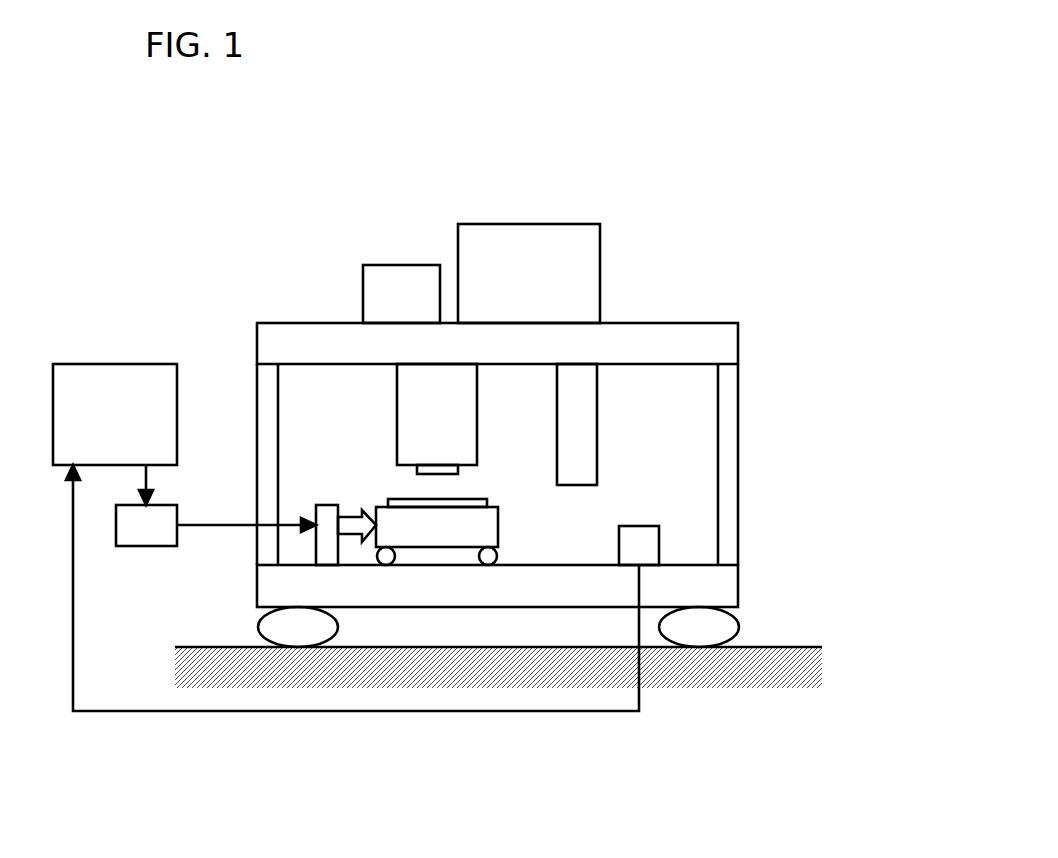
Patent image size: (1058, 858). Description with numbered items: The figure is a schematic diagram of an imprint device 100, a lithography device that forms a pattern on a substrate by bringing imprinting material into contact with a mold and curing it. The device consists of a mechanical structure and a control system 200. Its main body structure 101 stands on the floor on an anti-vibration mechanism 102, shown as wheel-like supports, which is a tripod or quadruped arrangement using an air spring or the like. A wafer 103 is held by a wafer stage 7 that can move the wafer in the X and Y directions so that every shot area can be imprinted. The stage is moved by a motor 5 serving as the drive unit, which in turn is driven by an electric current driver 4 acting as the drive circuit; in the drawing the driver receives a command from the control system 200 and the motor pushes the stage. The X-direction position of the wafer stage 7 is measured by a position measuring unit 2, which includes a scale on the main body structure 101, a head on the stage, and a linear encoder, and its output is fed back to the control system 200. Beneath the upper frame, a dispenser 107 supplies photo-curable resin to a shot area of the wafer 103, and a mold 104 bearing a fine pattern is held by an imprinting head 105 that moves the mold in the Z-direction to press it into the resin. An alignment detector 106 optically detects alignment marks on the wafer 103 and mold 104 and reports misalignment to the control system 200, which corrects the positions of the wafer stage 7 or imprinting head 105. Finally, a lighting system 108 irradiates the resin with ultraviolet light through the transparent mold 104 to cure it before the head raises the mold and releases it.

The imprint device 100 is at (482, 146).
The main body structure 101 is at (739, 585).
The anti-vibration mechanism 102 is at (257, 626).
The wafer 103 is at (388, 498).
The mold 104 is at (412, 497).
The imprinting head 105 is at (397, 410).
The alignment detector 106 is at (600, 262).
The dispenser 107 is at (585, 395).
The lighting system 108 is at (402, 265).
The position measuring unit 2 is at (659, 552).
The electric current driver 4 is at (150, 546).
The motor 5 is at (316, 548).
The wafer stage 7 is at (363, 512).
The control system 200 is at (115, 364).